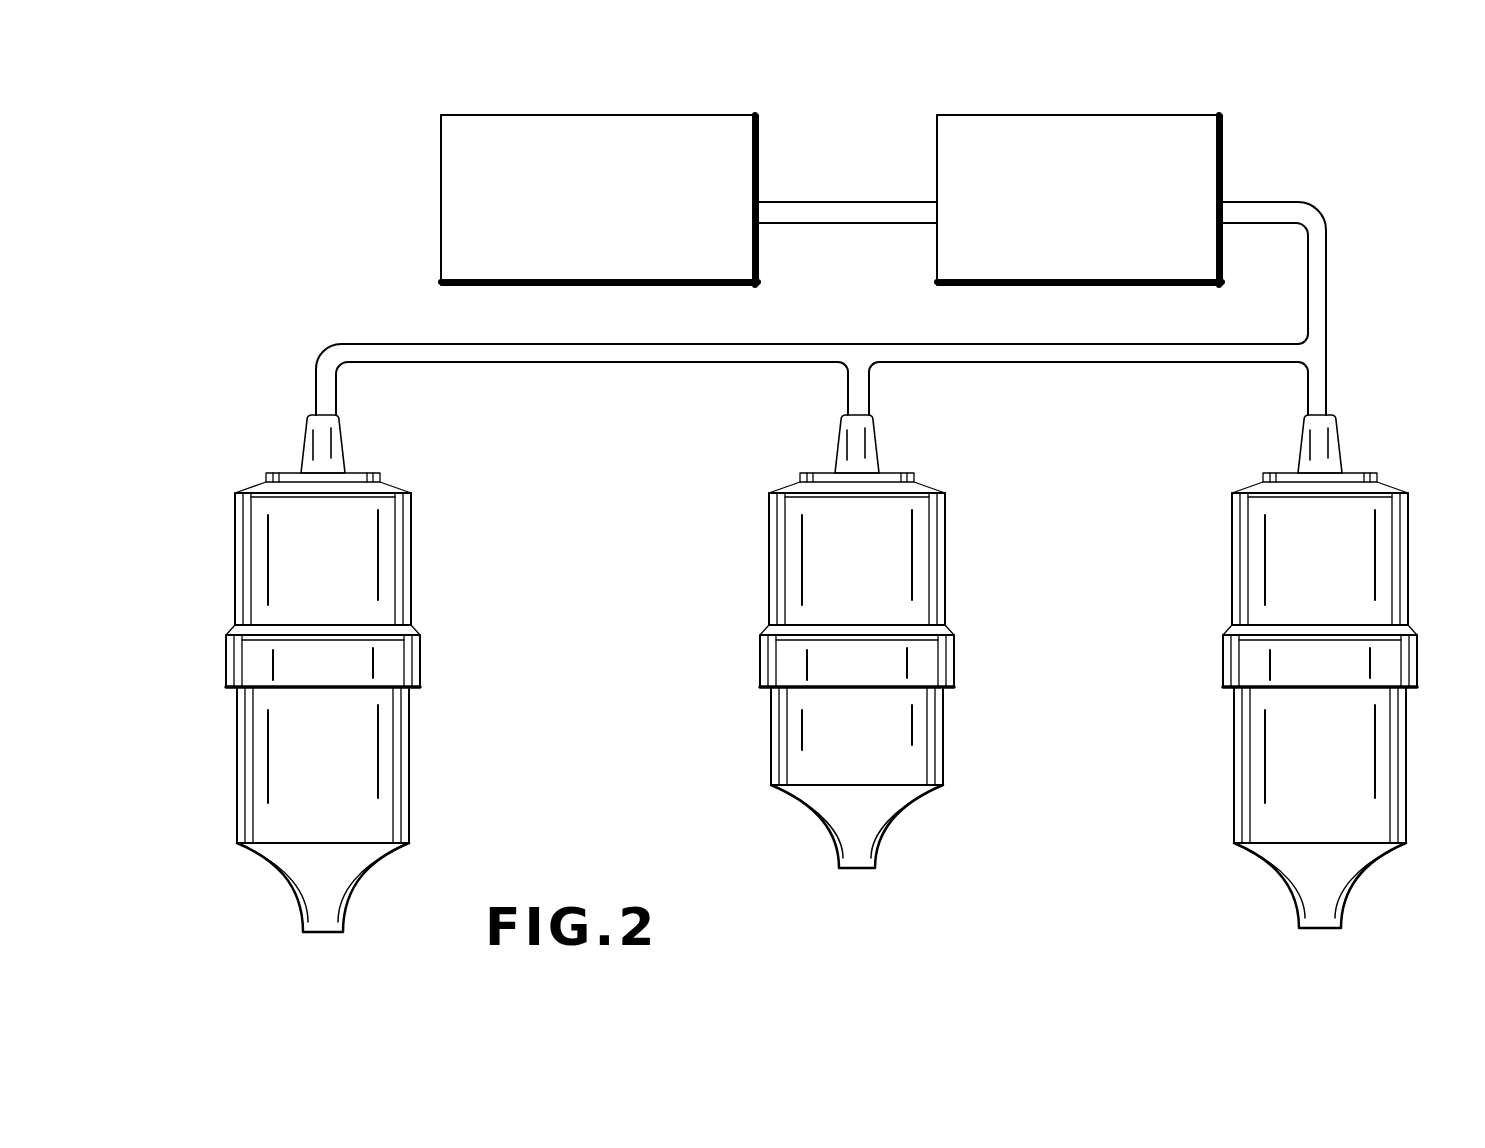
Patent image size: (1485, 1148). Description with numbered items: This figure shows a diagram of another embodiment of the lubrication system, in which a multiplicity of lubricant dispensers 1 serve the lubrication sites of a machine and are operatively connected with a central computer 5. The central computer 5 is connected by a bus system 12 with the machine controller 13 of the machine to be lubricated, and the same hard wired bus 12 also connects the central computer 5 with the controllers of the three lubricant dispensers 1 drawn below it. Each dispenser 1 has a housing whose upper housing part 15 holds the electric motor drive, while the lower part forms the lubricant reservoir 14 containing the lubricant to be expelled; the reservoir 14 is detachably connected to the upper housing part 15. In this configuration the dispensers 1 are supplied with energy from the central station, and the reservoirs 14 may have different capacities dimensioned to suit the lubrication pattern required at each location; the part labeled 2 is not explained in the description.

The lubricant dispenser 1 is at (805, 627).
The clamping ring 2 is at (226, 588).
The central computer 5 is at (1198, 172).
The bus system 12 is at (852, 212).
The machine controller 13 is at (440, 200).
The lubricant reservoir 14 is at (392, 768).
The upper housing part 15 is at (393, 578).